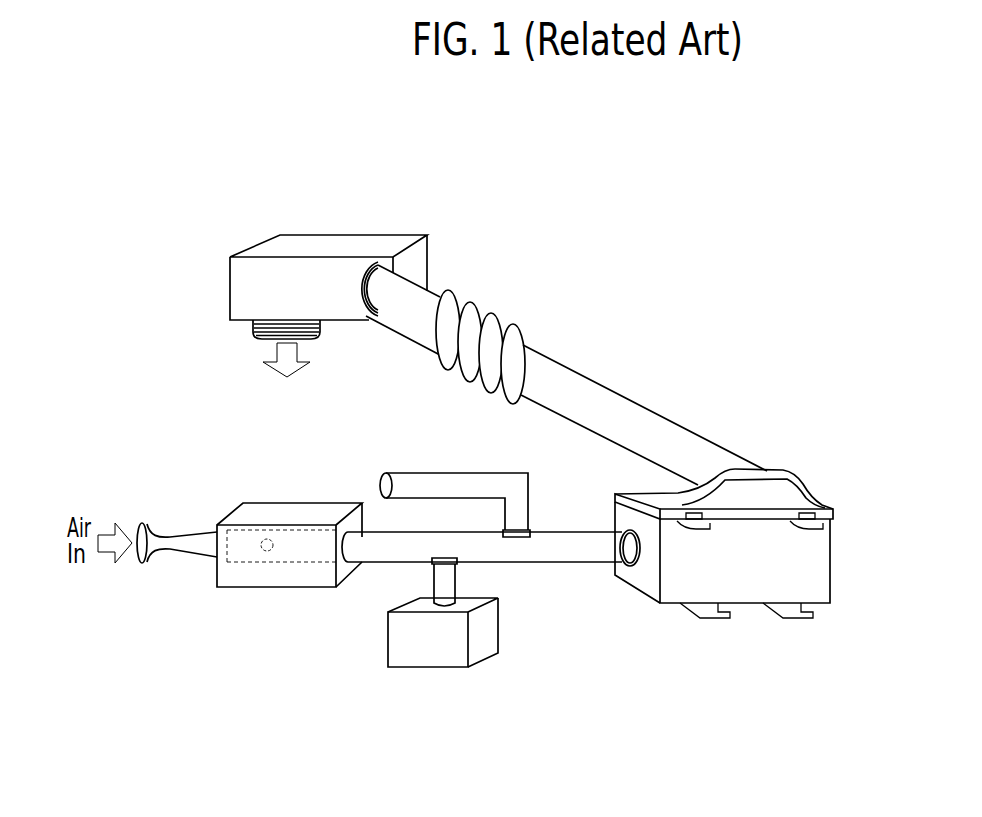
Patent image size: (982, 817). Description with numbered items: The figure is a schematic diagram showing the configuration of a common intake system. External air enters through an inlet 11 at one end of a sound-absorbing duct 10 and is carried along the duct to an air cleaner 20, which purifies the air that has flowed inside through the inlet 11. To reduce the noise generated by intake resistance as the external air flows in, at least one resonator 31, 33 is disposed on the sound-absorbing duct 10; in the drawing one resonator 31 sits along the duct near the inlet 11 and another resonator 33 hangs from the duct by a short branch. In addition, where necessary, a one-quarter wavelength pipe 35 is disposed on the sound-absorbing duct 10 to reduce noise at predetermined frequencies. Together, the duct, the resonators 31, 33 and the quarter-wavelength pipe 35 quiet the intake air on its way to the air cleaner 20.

The sound-absorbing duct 10 is at (580, 558).
The inlet 11 is at (143, 565).
The air cleaner 20 is at (750, 598).
The resonator 31 is at (278, 587).
The resonator 33 is at (432, 662).
The one-quarter wavelength pipe 35 is at (455, 472).